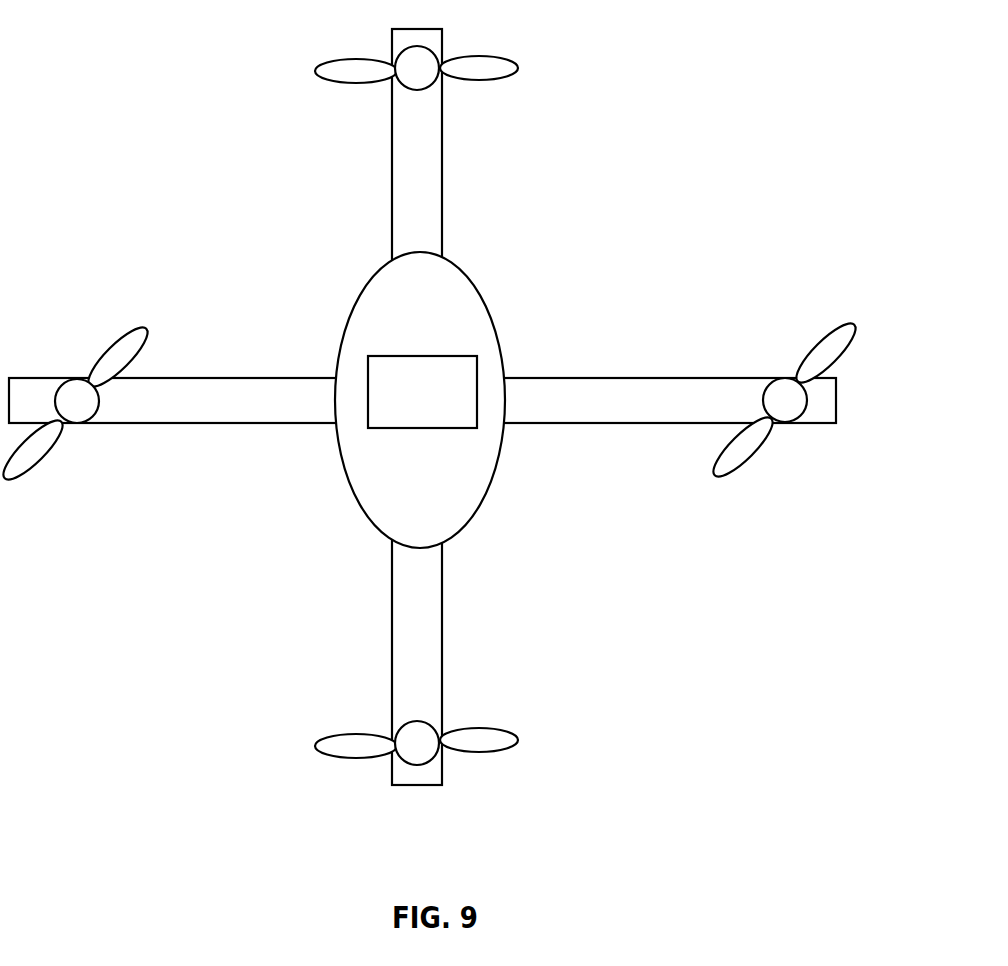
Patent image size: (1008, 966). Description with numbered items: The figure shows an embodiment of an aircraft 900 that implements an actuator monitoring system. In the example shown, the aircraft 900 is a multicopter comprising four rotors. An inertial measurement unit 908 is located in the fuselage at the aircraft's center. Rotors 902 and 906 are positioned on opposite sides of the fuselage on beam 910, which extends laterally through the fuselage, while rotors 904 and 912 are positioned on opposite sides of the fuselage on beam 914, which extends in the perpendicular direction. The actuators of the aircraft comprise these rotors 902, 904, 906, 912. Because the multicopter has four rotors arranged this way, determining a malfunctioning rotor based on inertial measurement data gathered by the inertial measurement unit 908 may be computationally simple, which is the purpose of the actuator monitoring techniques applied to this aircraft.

The aircraft 900 is at (484, 500).
The rotor 902 is at (128, 330).
The rotor 904 is at (353, 58).
The rotor 906 is at (830, 332).
The inertial measurement unit 908 is at (438, 355).
The beam 910 is at (838, 399).
The rotor 912 is at (358, 730).
The beam 914 is at (417, 788).